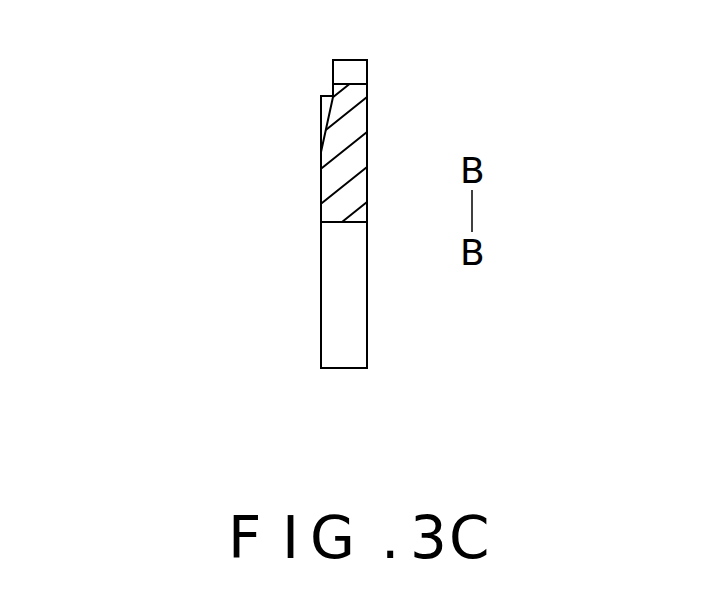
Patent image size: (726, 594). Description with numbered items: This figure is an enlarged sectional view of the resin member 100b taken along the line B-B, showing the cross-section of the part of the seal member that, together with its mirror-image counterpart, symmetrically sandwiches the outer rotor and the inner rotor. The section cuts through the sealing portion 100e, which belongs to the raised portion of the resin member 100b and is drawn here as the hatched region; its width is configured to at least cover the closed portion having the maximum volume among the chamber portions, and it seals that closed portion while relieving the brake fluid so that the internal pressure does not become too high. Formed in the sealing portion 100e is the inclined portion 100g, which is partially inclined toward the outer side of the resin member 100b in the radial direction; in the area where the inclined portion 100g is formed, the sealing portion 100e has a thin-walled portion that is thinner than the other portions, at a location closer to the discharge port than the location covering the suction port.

The resin member 100b is at (385, 67).
The inclined portion 100g is at (322, 120).
The sealing portion 100e is at (321, 190).